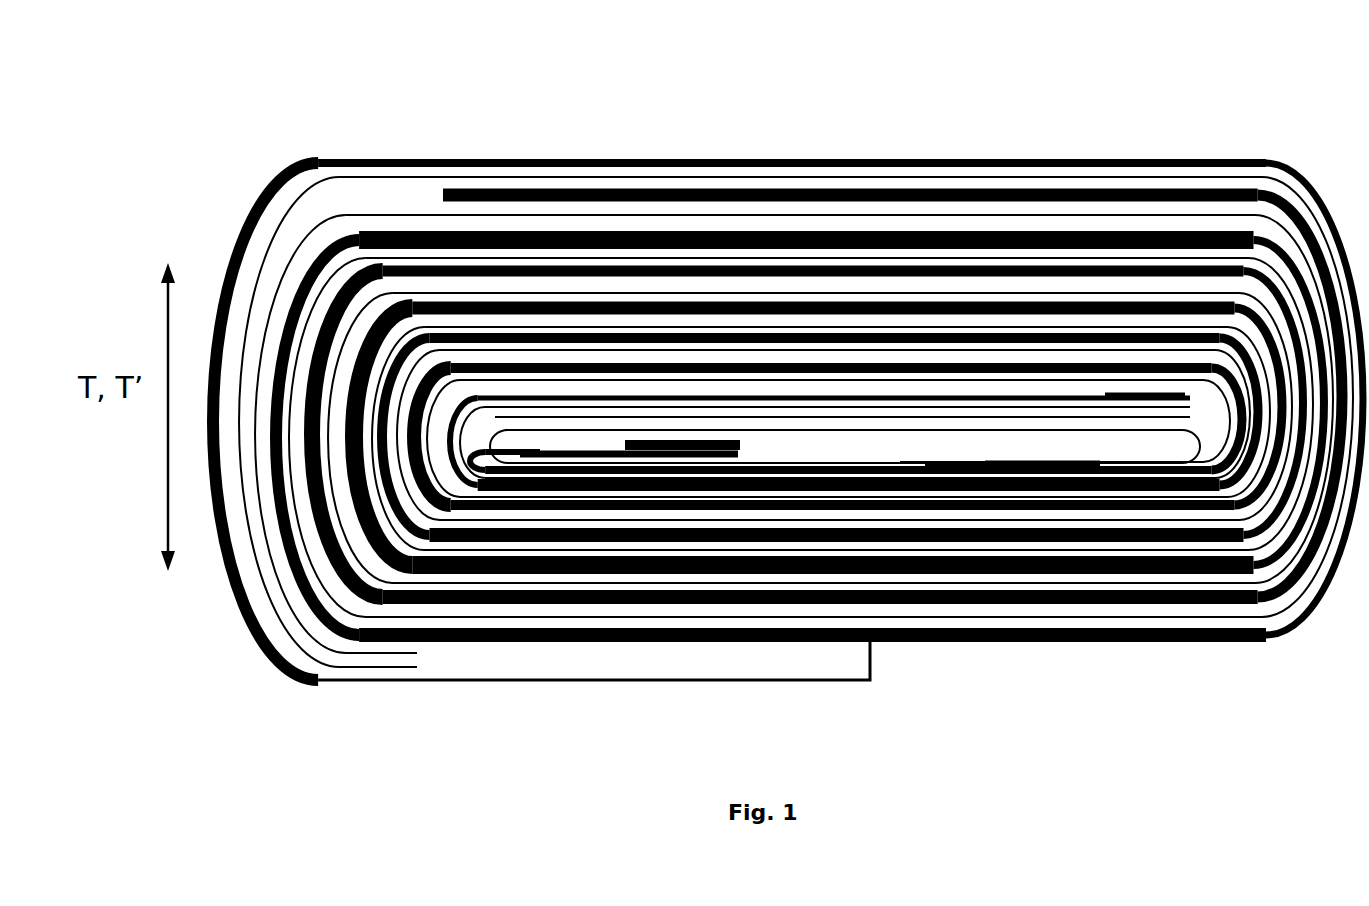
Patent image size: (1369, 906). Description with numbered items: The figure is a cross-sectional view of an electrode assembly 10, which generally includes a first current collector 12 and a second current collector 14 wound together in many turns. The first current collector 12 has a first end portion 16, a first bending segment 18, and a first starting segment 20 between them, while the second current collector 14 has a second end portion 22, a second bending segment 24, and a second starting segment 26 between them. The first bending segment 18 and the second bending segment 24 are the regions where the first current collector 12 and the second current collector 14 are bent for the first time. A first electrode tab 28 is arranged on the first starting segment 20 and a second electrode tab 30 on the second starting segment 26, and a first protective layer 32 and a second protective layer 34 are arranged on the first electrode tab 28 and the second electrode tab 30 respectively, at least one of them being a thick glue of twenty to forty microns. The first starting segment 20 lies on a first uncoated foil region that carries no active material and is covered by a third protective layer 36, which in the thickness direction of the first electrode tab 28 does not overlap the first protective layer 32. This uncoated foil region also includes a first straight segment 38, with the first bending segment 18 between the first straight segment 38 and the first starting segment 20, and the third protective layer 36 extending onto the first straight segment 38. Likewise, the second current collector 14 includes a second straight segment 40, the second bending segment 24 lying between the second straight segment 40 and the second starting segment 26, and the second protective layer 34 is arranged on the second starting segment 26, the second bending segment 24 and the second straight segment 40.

The electrode assembly 10 is at (362, 90).
The first current collector 12 is at (778, 445).
The second current collector 14 is at (892, 462).
The first end portion 16 is at (517, 452).
The first bending segment 18 is at (1195, 420).
The first starting segment 20 is at (973, 445).
The second end portion 22 is at (598, 475).
The second bending segment 24 is at (1218, 457).
The second starting segment 26 is at (823, 472).
The first electrode tab 28 is at (648, 440).
The second electrode tab 30 is at (1035, 462).
The first protective layer 32 is at (677, 460).
The second protective layer 34 is at (955, 473).
The third protective layer 36 is at (1139, 412).
The first straight segment 38 is at (808, 400).
The second straight segment 40 is at (1065, 462).